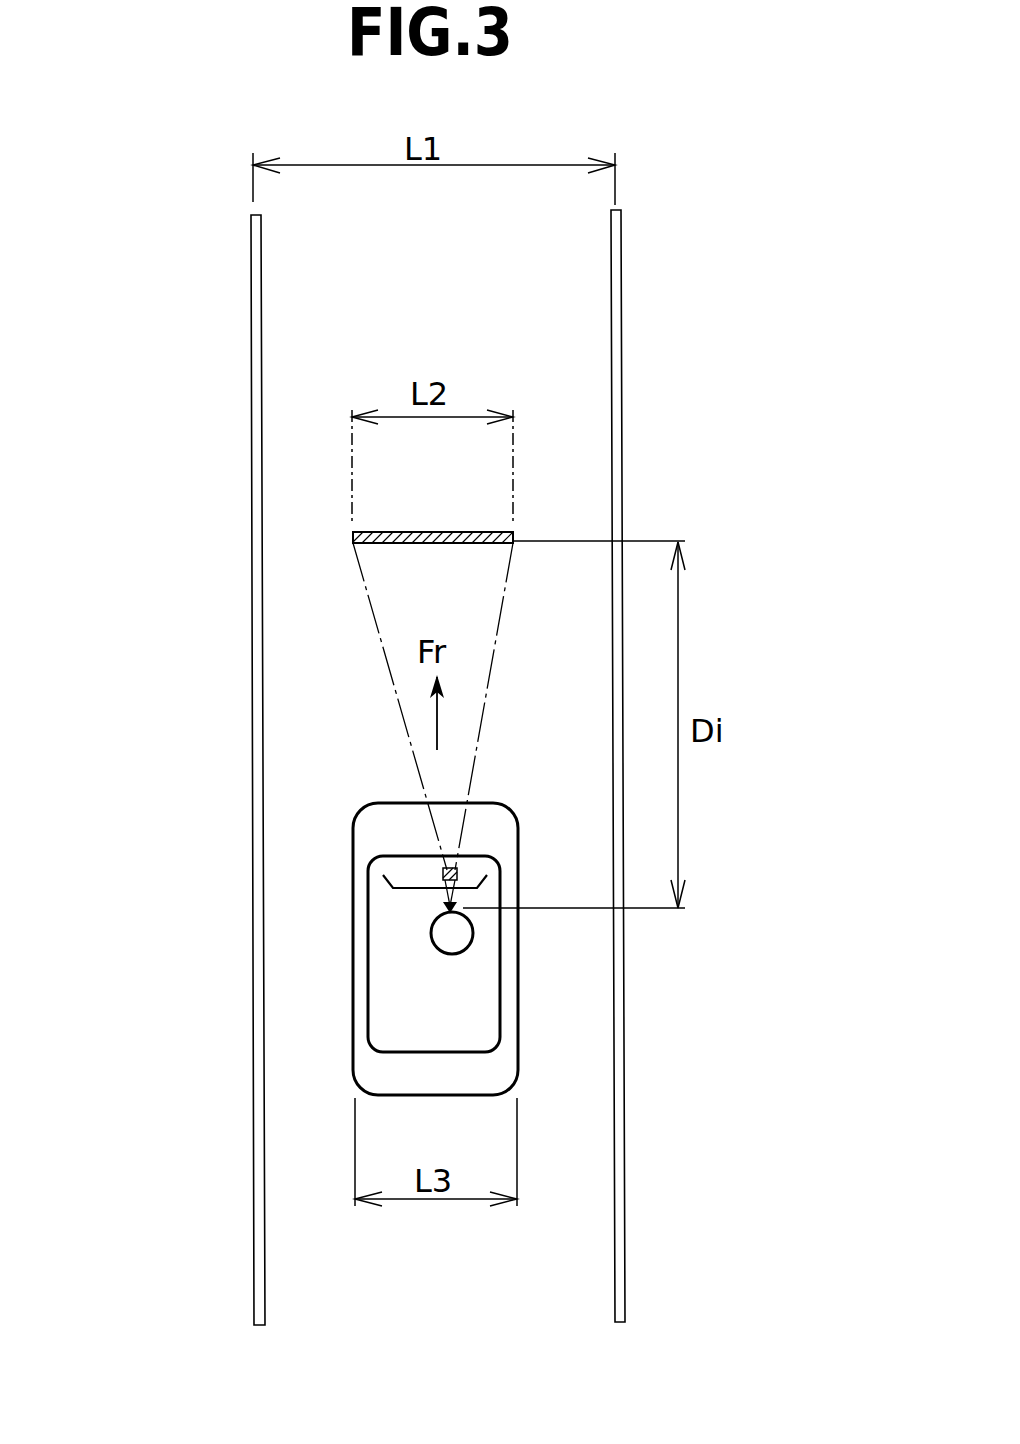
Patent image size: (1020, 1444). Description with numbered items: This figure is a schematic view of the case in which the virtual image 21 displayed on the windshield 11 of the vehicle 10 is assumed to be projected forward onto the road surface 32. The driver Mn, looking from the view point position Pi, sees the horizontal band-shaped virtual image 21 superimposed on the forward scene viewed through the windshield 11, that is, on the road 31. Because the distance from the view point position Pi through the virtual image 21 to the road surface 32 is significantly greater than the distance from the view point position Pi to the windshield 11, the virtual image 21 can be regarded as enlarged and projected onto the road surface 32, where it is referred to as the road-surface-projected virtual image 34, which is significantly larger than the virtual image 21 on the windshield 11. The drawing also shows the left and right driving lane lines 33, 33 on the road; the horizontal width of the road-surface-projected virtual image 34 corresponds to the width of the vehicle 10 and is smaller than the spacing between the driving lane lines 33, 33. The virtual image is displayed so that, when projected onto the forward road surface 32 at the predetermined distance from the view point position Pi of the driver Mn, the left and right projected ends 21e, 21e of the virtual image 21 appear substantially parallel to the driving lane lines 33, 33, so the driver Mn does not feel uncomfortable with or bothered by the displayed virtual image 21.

The vehicle 10 is at (400, 1097).
The windshield 11 is at (397, 877).
The virtual image 21 is at (445, 868).
The projected end 21e is at (352, 540).
The road 31 is at (530, 270).
The road surface 32 is at (534, 338).
The driving lane line 33 is at (249, 390).
The road-surface-projected virtual image 34 is at (385, 545).
The view point position Pi is at (449, 906).
The driver Mn is at (440, 945).